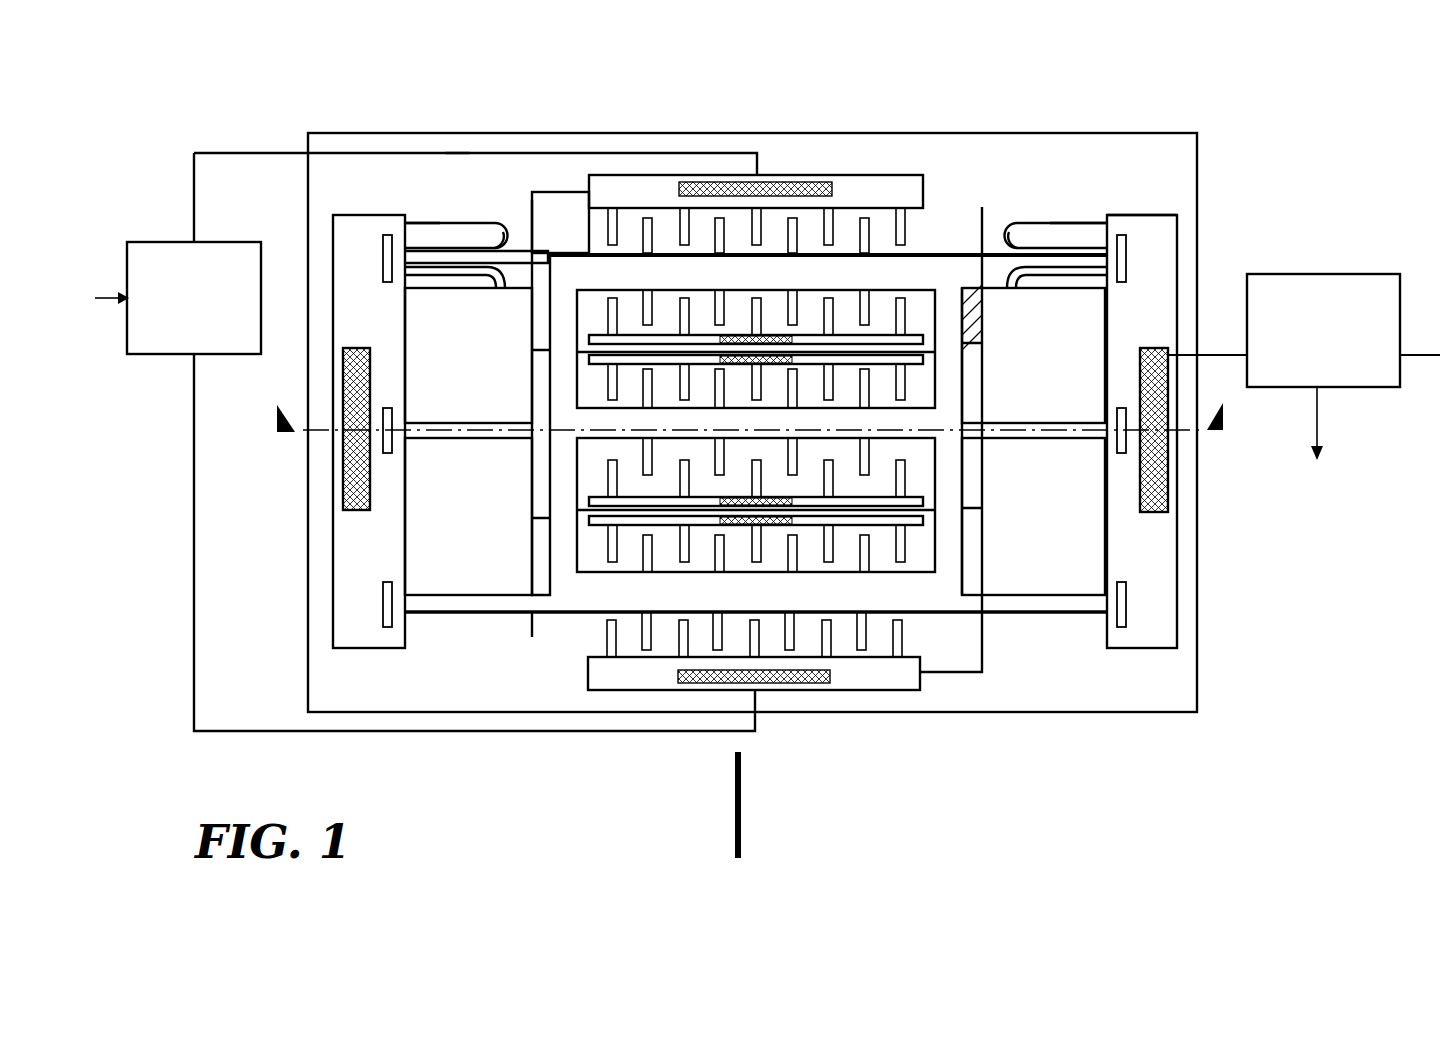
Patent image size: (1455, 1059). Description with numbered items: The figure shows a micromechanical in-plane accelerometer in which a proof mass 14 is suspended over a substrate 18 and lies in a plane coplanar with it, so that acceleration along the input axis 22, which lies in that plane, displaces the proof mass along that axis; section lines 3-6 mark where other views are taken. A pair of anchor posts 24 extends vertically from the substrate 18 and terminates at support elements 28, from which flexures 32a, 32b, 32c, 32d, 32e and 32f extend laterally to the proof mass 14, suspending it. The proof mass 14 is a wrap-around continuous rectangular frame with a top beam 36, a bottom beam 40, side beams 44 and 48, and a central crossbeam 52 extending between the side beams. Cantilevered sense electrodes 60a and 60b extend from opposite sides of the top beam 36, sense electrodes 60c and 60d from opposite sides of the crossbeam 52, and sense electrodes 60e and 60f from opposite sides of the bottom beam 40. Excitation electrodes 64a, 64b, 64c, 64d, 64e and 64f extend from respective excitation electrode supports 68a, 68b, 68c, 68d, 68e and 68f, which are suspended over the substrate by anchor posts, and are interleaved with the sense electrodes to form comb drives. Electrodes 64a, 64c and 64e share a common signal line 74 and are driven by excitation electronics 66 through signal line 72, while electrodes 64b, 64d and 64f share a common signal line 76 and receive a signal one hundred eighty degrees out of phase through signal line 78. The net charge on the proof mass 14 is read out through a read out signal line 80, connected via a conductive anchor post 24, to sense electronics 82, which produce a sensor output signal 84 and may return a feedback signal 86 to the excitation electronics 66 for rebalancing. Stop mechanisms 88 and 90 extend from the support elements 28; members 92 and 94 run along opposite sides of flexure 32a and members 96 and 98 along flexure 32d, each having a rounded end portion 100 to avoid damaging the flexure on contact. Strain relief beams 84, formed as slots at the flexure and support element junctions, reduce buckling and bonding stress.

The substrate 18 is at (1208, 171).
The signal line 78 is at (553, 732).
The signal line 72 is at (456, 153).
The top beam 36 is at (586, 252).
The common signal line 74 is at (529, 214).
The excitation electronics 66 is at (218, 242).
The sense electronics 82 is at (1290, 274).
The read out signal line 80 is at (1213, 352).
The feedback signal 86 is at (106, 296).
The input axis 22 is at (748, 770).
The section lines 3-6 is at (749, 402).
The support elements 28 is at (333, 253).
The strain relief beams 84 is at (384, 262).
The anchor posts 24 is at (343, 476).
The stop member 92 is at (458, 222).
The stop mechanism 88 is at (416, 215).
The rounded end portion 100 is at (504, 231).
The proof mass 14 is at (949, 246).
The stop member 94 is at (433, 283).
The flexure 32a is at (517, 270).
The side beam 44 is at (547, 397).
The flexure 32b is at (440, 438).
The flexure 32c is at (438, 612).
The flexure 32f is at (1002, 613).
The flexure 32d is at (1000, 252).
The stop mechanism 90 is at (1069, 199).
The stop member 96 is at (1094, 216).
The stop member 98 is at (1070, 288).
The side beam 48 is at (963, 378).
The flexure 32e is at (1040, 423).
The common signal line 76 is at (981, 530).
The bottom beam 40 is at (934, 613).
The excitation electrode support 68a is at (810, 175).
The excitation electrodes 64a is at (690, 220).
The sense electrodes 60a is at (838, 237).
The excitation electrode support 68b is at (593, 335).
The excitation electrodes 64b is at (905, 314).
The sense electrodes 60b is at (796, 305).
The excitation electrode support 68c is at (597, 365).
The excitation electrodes 64c is at (903, 380).
The sense electrodes 60c is at (794, 387).
The central crossbeam 52 is at (936, 472).
The excitation electrode support 68d is at (597, 500).
The excitation electrodes 64d is at (900, 480).
The sense electrodes 60d is at (800, 478).
The excitation electrode support 68e is at (597, 528).
The excitation electrodes 64e is at (900, 560).
The sense electrodes 60e is at (796, 560).
The excitation electrode support 68f is at (589, 672).
The excitation electrodes 64f is at (903, 652).
The sense electrodes 60f is at (858, 630).